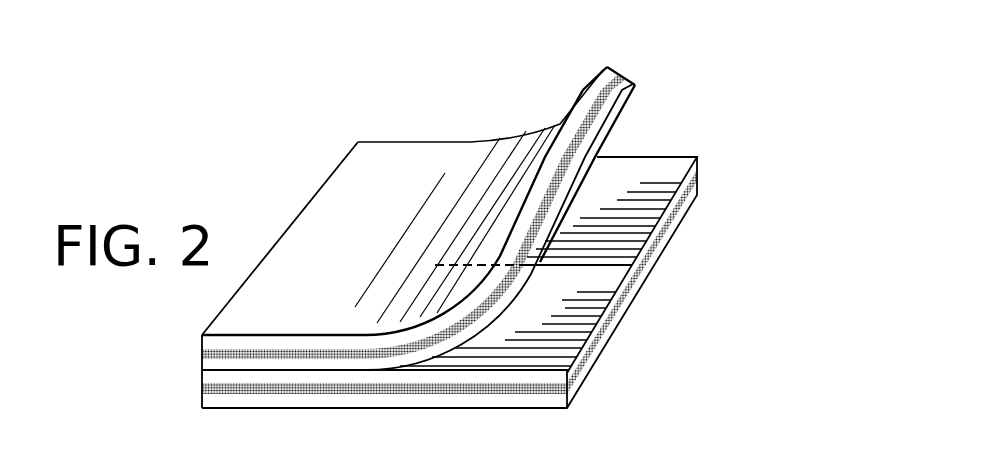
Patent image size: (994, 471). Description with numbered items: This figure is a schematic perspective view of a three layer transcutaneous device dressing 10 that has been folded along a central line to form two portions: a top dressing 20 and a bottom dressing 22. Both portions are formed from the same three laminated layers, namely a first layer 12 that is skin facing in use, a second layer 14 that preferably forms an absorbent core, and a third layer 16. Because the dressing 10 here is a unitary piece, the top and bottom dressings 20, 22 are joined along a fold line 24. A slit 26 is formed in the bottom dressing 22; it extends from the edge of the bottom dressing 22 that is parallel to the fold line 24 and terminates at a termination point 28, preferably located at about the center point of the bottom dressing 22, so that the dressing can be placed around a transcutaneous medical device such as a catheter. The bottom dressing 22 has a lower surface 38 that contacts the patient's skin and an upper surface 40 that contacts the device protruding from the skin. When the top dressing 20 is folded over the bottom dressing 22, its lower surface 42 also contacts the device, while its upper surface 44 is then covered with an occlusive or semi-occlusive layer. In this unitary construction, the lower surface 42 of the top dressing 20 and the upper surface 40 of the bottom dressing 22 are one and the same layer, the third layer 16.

The dressing 10 is at (489, 246).
The first layer 12 is at (479, 288).
The second layer 14 is at (397, 390).
The third layer 16 is at (535, 378).
The top dressing 20 is at (405, 219).
The bottom dressing 22 is at (622, 176).
The fold line 24 is at (203, 370).
The slit 26 is at (567, 306).
The termination point 28 is at (435, 262).
The lower surface 38 is at (603, 348).
The upper surface 40 is at (658, 190).
The lower surface 42 is at (620, 122).
The upper surface 44 is at (575, 128).